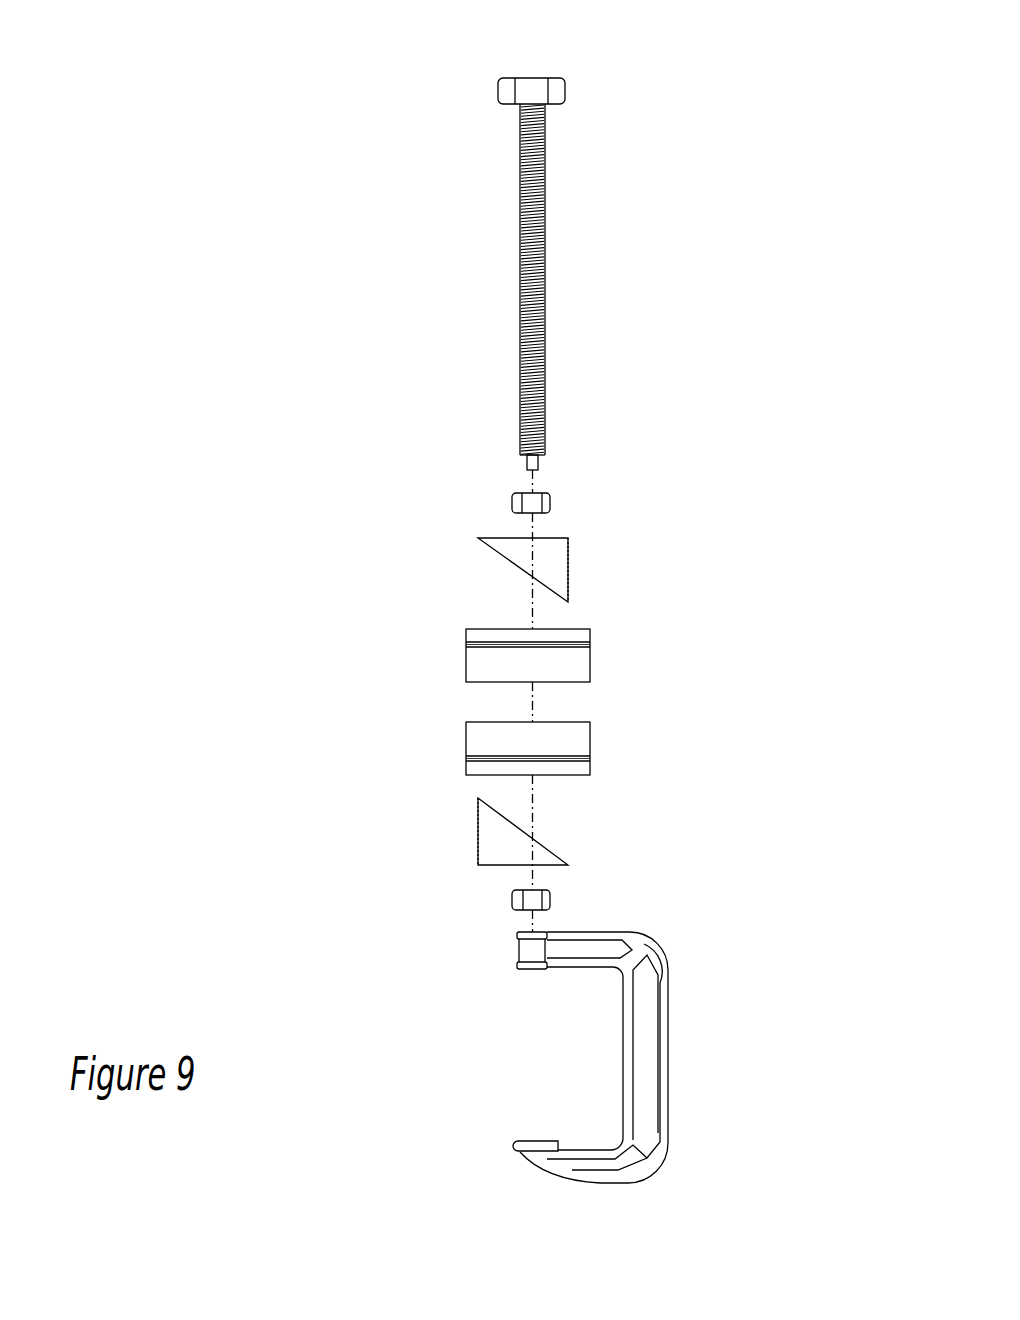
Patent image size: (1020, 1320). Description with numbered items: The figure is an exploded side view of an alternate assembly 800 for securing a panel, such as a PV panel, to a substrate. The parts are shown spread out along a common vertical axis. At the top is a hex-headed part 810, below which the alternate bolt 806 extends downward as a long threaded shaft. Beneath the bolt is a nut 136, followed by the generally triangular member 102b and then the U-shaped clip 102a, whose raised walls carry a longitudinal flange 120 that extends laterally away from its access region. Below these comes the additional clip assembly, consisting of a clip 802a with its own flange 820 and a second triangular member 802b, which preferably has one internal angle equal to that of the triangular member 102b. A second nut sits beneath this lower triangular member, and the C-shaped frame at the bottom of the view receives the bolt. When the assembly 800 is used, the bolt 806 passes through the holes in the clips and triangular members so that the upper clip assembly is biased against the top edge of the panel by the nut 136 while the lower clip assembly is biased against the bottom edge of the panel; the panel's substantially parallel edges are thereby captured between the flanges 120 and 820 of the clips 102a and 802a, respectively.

The bolt head 810 is at (560, 90).
The alternate bolt 806 is at (540, 318).
The nut 136 is at (552, 505).
The triangular member 102b is at (553, 568).
The clip 102a is at (580, 663).
The longitudinal flange 120 is at (467, 643).
The clip 802a is at (580, 743).
The flange 820 is at (468, 763).
The triangular member 802b is at (538, 855).
The alternate assembly 800 is at (545, 897).